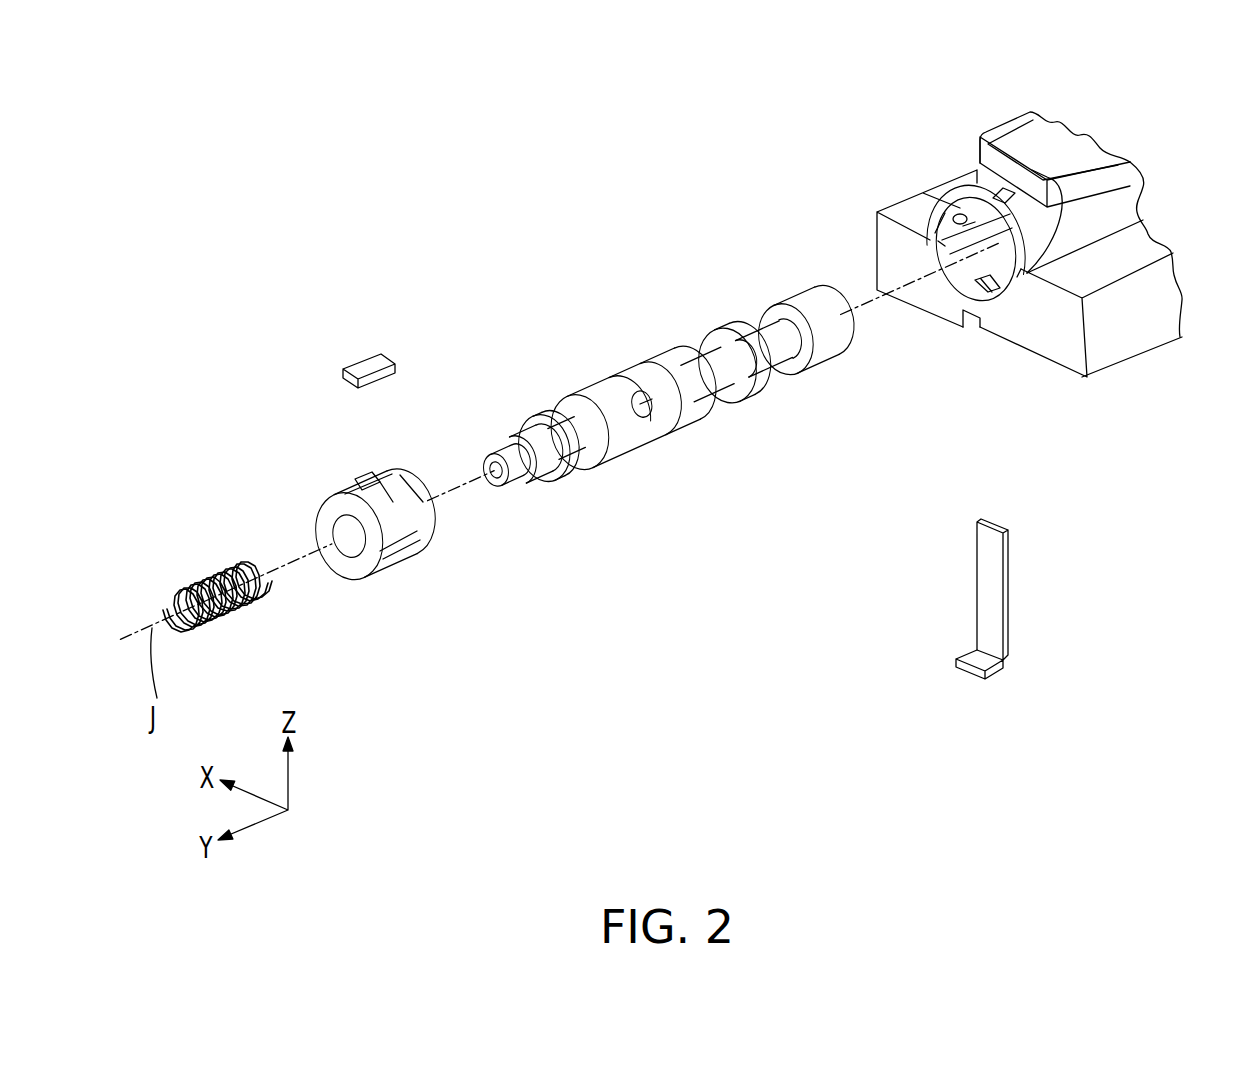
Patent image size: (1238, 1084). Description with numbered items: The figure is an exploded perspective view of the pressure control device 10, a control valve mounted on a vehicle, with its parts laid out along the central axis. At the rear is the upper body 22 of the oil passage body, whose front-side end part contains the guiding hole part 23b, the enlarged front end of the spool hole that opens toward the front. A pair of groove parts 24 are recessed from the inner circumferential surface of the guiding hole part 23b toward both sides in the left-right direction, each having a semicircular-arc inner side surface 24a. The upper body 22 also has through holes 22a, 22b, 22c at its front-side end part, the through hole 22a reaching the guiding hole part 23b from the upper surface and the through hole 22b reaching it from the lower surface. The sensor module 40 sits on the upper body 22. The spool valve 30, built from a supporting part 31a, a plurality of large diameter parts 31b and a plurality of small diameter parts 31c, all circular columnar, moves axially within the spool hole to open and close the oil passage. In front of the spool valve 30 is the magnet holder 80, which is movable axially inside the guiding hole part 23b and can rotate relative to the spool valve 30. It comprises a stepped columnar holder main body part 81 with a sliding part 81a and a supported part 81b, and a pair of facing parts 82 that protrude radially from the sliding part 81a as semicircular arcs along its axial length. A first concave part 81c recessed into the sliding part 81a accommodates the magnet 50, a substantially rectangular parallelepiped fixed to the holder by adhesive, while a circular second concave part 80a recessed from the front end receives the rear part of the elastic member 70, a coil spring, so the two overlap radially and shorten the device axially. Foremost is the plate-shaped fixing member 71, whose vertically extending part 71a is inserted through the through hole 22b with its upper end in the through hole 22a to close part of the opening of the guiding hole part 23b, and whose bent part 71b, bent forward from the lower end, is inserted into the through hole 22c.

The pressure control device 10 is at (508, 150).
The upper body 22 is at (995, 264).
The through hole 22a is at (995, 188).
The through hole 22b is at (993, 300).
The through hole 22c is at (972, 318).
The guiding hole part 23b is at (955, 213).
The groove part 24 is at (926, 241).
The inner side surface 24a is at (968, 226).
The spool valve 30 is at (669, 425).
The supporting part 31a is at (522, 472).
The large diameter part 31b is at (633, 432).
The small diameter part 31c is at (620, 385).
The sensor module 40 is at (1060, 147).
The magnet 50 is at (370, 357).
The elastic member 70 is at (198, 578).
The fixing member 71 is at (941, 654).
The extending part 71a is at (985, 582).
The bent part 71b is at (975, 660).
The magnet holder 80 is at (386, 517).
The second concave part 80a is at (355, 552).
The holder main body part 81 is at (407, 428).
The sliding part 81a is at (393, 502).
The supported part 81b is at (423, 502).
The first concave part 81c is at (368, 485).
The facing part 82 is at (313, 521).